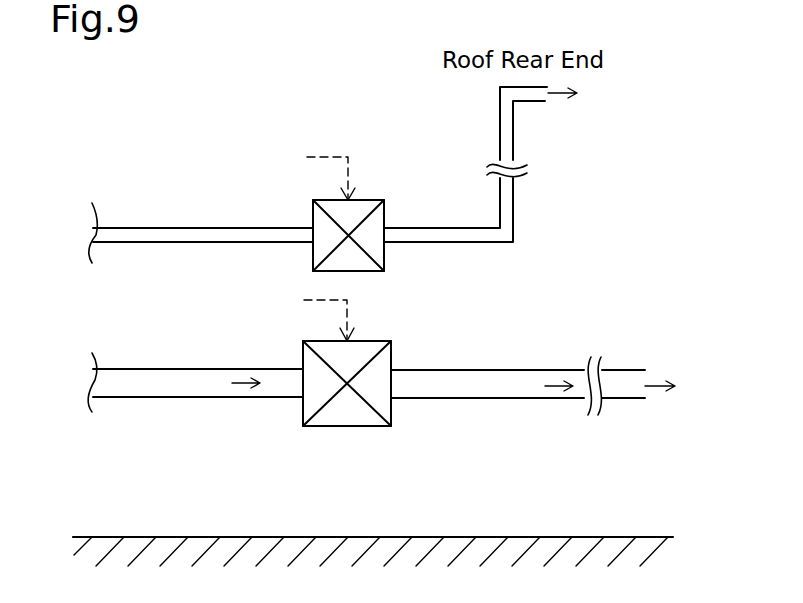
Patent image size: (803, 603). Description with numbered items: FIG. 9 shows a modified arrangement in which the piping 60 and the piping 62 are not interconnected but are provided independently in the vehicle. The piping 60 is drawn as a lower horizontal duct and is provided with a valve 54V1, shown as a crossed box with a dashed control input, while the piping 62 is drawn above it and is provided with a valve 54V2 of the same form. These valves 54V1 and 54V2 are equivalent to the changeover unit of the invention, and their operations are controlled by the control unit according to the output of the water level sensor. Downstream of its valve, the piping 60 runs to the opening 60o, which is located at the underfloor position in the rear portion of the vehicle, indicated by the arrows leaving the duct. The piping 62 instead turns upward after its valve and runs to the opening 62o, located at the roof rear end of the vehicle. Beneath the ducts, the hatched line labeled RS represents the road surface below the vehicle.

The piping 62 is at (152, 225).
The valve 54V2 is at (387, 212).
The opening 62o is at (545, 103).
The piping 60 is at (145, 400).
The valve 54V1 is at (392, 352).
The opening 60o is at (633, 370).
The road surface RS is at (393, 537).